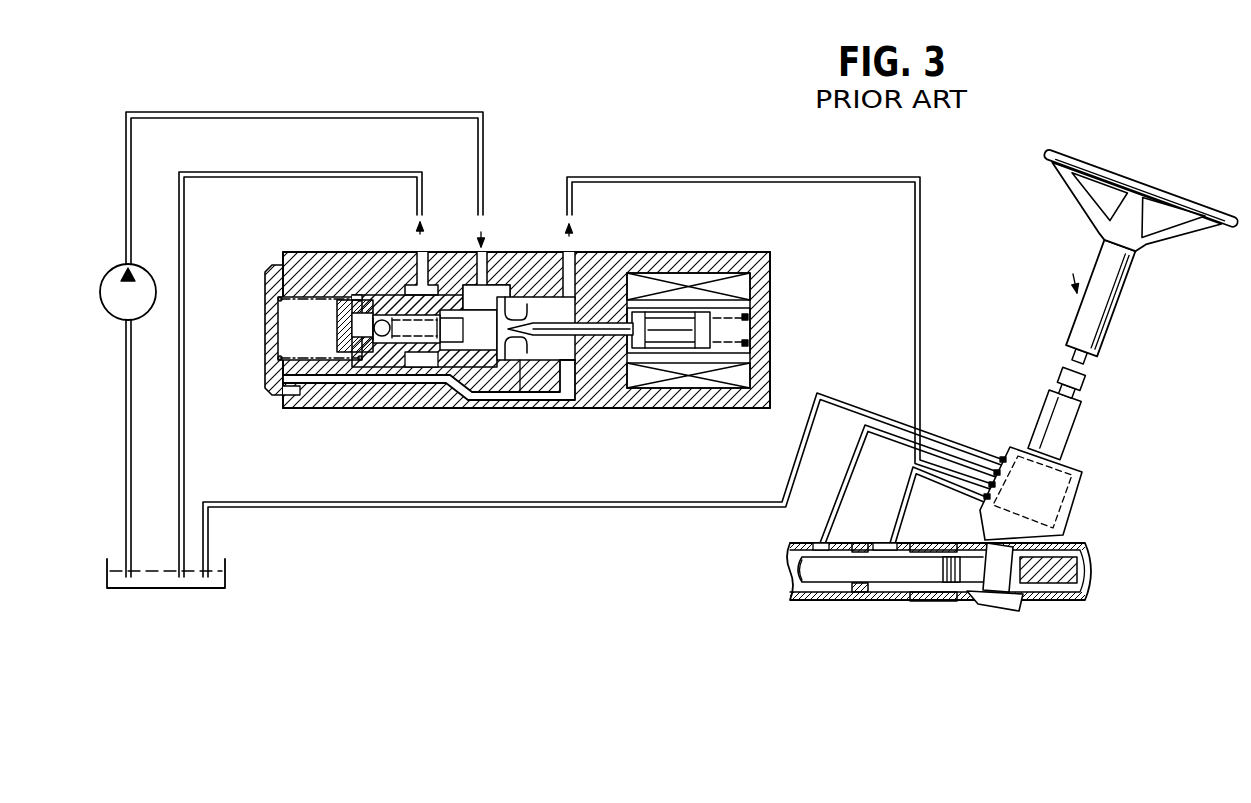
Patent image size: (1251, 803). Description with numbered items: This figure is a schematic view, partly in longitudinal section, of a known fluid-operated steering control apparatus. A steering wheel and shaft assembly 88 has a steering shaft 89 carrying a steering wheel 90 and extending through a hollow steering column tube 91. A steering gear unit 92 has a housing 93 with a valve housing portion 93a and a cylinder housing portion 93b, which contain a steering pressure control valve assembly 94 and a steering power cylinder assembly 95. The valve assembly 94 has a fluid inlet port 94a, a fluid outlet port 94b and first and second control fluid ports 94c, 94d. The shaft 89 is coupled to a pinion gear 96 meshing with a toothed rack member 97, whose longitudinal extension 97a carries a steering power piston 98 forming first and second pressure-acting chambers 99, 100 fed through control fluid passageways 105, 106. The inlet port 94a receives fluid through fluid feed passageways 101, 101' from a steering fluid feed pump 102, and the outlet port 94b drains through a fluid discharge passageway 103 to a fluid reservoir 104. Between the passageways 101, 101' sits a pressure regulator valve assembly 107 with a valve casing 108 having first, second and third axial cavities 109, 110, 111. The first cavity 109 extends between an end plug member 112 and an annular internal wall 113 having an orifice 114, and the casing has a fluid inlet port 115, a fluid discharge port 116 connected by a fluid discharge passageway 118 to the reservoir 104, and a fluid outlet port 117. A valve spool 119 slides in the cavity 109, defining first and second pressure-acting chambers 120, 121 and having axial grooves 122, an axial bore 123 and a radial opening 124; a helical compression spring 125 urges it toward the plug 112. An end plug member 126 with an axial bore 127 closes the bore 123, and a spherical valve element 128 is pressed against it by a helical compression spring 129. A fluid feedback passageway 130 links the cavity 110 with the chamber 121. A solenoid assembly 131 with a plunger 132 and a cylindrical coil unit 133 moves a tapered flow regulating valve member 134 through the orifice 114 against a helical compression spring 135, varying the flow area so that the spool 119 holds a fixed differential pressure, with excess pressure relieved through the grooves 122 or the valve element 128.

The steering wheel and shaft assembly 88 is at (1065, 272).
The steering shaft 89 is at (1087, 377).
The steering wheel 90 is at (1087, 165).
The hollow steering column tube 91 is at (1120, 312).
The steering gear unit 92 is at (1110, 502).
The housing 93 is at (1070, 535).
The valve housing portion 93a is at (1077, 500).
The cylinder housing portion 93b is at (933, 600).
The steering pressure control valve assembly 94 is at (1067, 470).
The fluid inlet port 94a is at (996, 488).
The fluid outlet port 94b is at (1000, 456).
The first control fluid port 94c is at (1001, 475).
The second control fluid port 94d is at (986, 498).
The steering power cylinder assembly 95 is at (915, 608).
The pinion gear 96 is at (1048, 570).
The toothed rack member 97 is at (937, 567).
The longitudinal extension 97a is at (793, 567).
The steering power piston 98 is at (862, 592).
The first pressure-acting chamber 99 is at (813, 543).
The second pressure-acting chamber 100 is at (877, 543).
The fluid feed passageway 101 is at (304, 174).
The fluid feed passageway 101' is at (779, 313).
The steering fluid feed pump 102 is at (145, 315).
The fluid discharge passageway 103 is at (548, 502).
The fluid reservoir 104 is at (227, 573).
The control fluid passageway 105 is at (850, 468).
The control fluid passageway 106 is at (907, 490).
The pressure regulator valve assembly 107 is at (783, 245).
The valve casing 108 is at (726, 262).
The first axial cavity 109 is at (387, 297).
The second axial cavity 110 is at (570, 358).
The third axial cavity 111 is at (665, 310).
The end plug member 112 is at (267, 288).
The annular internal wall 113 is at (527, 311).
The orifice 114 is at (538, 362).
The fluid inlet port 115 is at (487, 255).
The fluid discharge port 116 is at (423, 253).
The fluid outlet port 117 is at (575, 255).
The fluid discharge passageway 118 is at (303, 172).
The valve spool 119 is at (417, 378).
The first pressure-acting chamber 120 is at (493, 392).
The second pressure-acting chamber 121 is at (278, 326).
The axial grooves 122 is at (473, 300).
The axial bore 123 is at (388, 347).
The radial opening 124 is at (410, 290).
The helical compression spring 125 is at (275, 361).
The end plug member 126 is at (337, 343).
The axial bore 127 is at (336, 330).
The spherical valve element 128 is at (357, 282).
The helical compression spring 129 is at (430, 350).
The fluid feedback passageway 130 is at (467, 396).
The solenoid assembly 131 is at (633, 392).
The plunger 132 is at (670, 350).
The cylindrical coil unit 133 is at (752, 285).
The flow regulating valve member 134 is at (603, 337).
The helical compression spring 135 is at (752, 333).